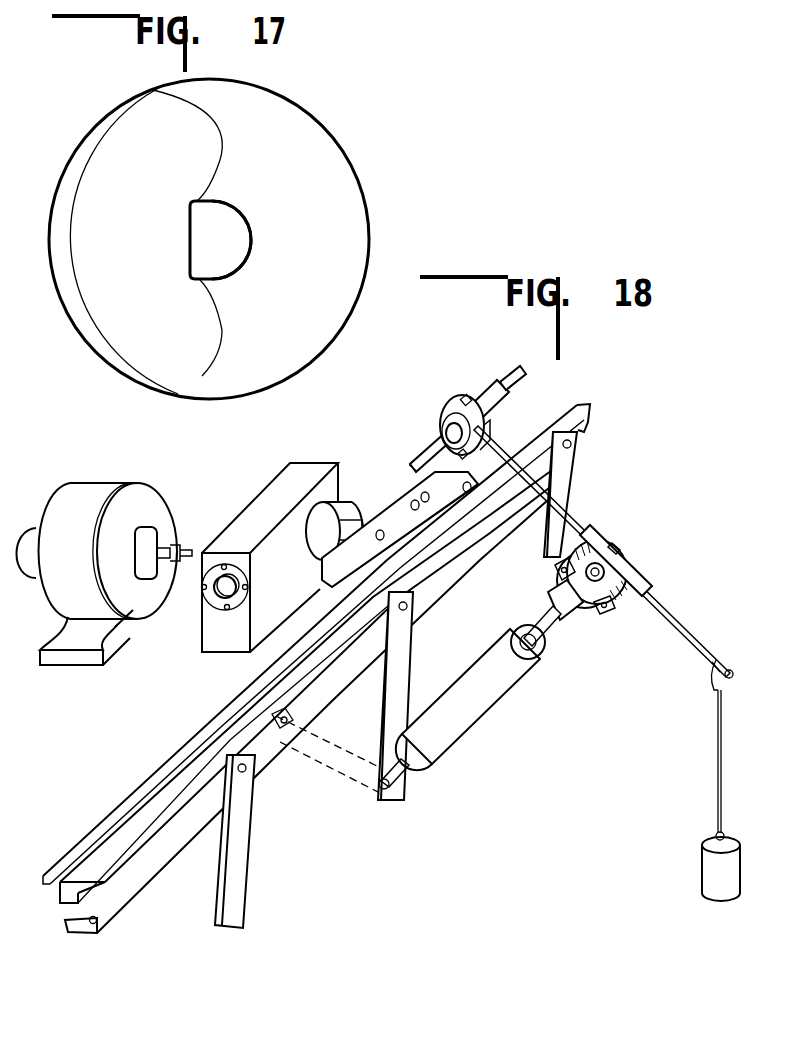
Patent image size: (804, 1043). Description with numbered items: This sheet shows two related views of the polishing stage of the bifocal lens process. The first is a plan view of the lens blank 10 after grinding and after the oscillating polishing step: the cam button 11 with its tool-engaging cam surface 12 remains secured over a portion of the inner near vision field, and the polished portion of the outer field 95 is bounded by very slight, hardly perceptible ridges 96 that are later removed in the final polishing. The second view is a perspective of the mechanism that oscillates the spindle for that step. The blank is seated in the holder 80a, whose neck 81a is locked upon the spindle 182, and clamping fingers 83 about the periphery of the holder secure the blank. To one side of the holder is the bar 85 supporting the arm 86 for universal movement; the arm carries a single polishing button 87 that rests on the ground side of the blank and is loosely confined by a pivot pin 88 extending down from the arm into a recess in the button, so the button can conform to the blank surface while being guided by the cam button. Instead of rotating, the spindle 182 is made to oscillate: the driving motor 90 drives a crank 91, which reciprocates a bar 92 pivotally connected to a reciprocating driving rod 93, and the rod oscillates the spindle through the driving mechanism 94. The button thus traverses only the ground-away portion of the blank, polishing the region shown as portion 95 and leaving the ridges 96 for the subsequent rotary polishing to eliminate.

In FIG. 17, the lens blank 10 is at (332, 135).
In FIG. 18, the lens blank 10 is at (640, 585).
In FIG. 17, the cam button 11 is at (240, 252).
In FIG. 18, the cam button 11 is at (622, 557).
In FIG. 17, the cam surface 12 is at (236, 206).
In FIG. 17, the polished portion of the outer field 95 is at (82, 167).
In FIG. 17, the ridges 96 is at (220, 128).
In FIG. 18, the bar 85 is at (515, 369).
In FIG. 18, the arm 86 is at (598, 537).
In FIG. 18, the polishing button 87 is at (617, 548).
In FIG. 18, the pivot pin 88 is at (627, 550).
In FIG. 18, the clamping fingers 83 is at (562, 564).
In FIG. 18, the holder 80a is at (585, 598).
In FIG. 18, the neck 81a is at (558, 600).
In FIG. 18, the spindle 182 is at (538, 623).
In FIG. 18, the driving motor 90 is at (78, 503).
In FIG. 18, the crank 91 is at (395, 513).
In FIG. 18, the bar 92 is at (260, 698).
In FIG. 18, the driving rod 93 is at (148, 867).
In FIG. 18, the driving mechanism 94 is at (402, 672).